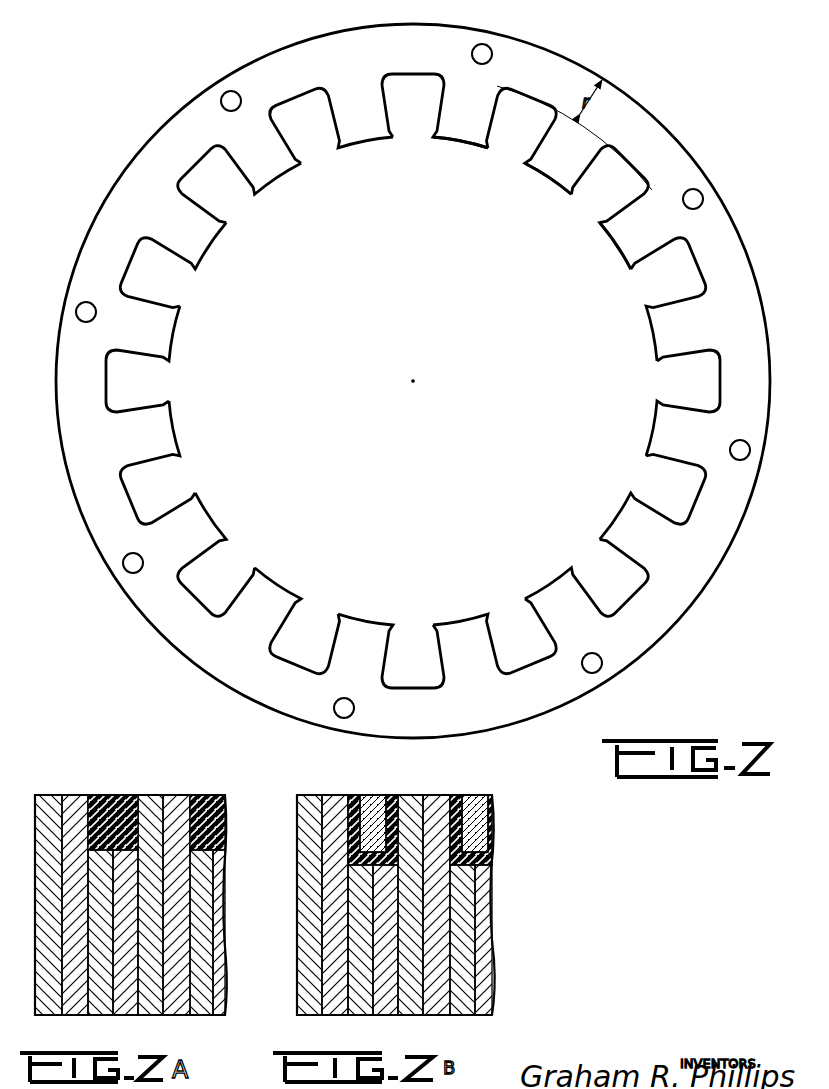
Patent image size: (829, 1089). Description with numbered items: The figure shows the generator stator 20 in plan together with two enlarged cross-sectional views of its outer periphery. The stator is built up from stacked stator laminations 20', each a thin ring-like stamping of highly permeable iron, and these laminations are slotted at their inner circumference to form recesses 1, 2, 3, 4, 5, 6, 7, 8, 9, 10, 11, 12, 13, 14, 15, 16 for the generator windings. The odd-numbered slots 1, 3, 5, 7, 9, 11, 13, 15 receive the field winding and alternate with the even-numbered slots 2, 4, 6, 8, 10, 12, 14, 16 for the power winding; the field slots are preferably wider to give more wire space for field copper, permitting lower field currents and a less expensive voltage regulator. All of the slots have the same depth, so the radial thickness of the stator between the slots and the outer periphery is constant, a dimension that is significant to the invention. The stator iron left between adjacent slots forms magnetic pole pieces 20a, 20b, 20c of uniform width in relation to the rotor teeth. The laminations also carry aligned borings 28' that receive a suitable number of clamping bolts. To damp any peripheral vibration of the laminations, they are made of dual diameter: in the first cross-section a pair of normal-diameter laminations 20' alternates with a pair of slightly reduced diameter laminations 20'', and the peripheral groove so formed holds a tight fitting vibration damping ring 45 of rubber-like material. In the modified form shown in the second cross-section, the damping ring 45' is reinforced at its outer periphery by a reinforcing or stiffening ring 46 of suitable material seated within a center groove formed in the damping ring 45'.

In FIG. 2, the recess 1 is at (388, 113).
In FIG. 2, the recess 2 is at (527, 142).
In FIG. 2, the recess 3 is at (621, 210).
In FIG. 2, the recess 4 is at (672, 296).
In FIG. 2, the recess 5 is at (690, 405).
In FIG. 2, the recess 6 is at (661, 503).
In FIG. 2, the recess 7 is at (591, 588).
In FIG. 2, the recess 8 is at (498, 617).
In FIG. 2, the recess 9 is at (387, 653).
In FIG. 2, the recess 10 is at (290, 630).
In FIG. 2, the recess 11 is at (230, 560).
In FIG. 2, the recess 12 is at (178, 474).
In FIG. 2, the recess 13 is at (162, 378).
In FIG. 2, the recess 14 is at (176, 268).
In FIG. 2, the recess 15 is at (242, 177).
In FIG. 2, the recess 16 is at (326, 129).
In FIG. 2, the stator 20 is at (413, 381).
In FIG. 2A, the stator 20 is at (185, 757).
In FIG. 2, the stator lamination 20' is at (654, 580).
In FIG. 2A, the stator lamination 20' is at (111, 889).
In FIG. 2B, the stator lamination 20' is at (368, 899).
In FIG. 2A, the reduced diameter lamination 20'' is at (165, 945).
In FIG. 2B, the reduced diameter lamination 20'' is at (435, 953).
In FIG. 2, the magnetic pole piece 20a is at (466, 142).
In FIG. 2, the magnetic pole piece 20b is at (552, 172).
In FIG. 2, the magnetic pole piece 20c is at (612, 244).
In FIG. 2, the boring 28' is at (408, 377).
In FIG. 2A, the vibration damping ring 45 is at (160, 806).
In FIG. 2B, the damping ring 45' is at (407, 809).
In FIG. 2B, the reinforcing ring 46 is at (370, 795).